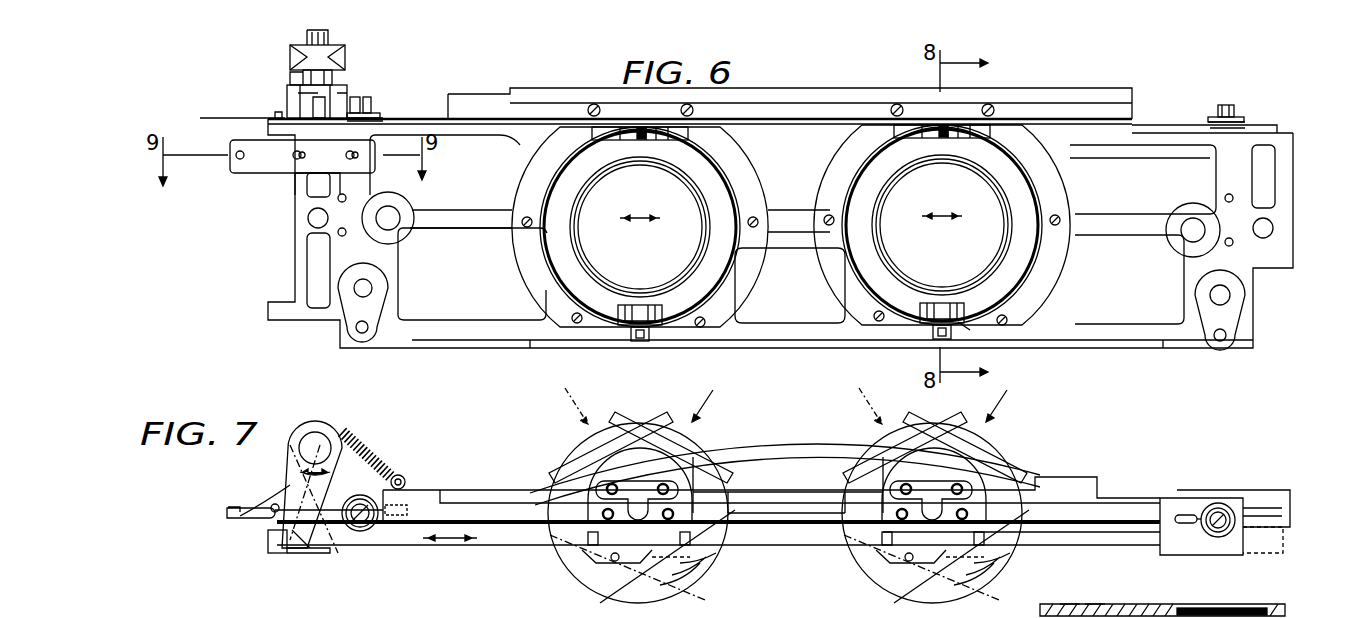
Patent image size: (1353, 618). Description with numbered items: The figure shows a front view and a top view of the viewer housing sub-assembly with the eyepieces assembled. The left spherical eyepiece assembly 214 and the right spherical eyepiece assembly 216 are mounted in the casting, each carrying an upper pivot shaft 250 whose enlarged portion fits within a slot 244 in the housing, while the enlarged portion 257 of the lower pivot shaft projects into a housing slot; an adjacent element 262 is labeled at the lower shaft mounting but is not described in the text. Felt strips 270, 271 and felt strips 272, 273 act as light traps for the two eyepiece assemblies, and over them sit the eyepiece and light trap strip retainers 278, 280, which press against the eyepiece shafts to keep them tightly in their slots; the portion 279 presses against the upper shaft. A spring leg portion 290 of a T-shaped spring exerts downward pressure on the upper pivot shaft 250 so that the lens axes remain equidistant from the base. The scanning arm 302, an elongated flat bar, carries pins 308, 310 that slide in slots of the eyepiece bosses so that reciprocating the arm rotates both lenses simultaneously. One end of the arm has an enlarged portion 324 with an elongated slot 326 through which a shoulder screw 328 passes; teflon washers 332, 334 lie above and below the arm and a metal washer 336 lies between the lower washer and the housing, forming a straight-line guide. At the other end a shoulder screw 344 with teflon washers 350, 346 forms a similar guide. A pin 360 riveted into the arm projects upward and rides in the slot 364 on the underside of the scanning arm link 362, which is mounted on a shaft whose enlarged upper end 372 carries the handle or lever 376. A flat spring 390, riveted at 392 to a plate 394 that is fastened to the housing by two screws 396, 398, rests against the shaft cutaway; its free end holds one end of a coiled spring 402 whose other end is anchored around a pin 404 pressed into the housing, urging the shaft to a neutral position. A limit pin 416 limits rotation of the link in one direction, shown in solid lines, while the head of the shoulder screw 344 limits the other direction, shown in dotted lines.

In FIG. 6, the left spherical eyepiece assembly 214 is at (990, 290).
In FIG. 7, the left spherical eyepiece assembly 214 is at (1010, 548).
In FIG. 6, the right spherical eyepiece assembly 216 is at (697, 285).
In FIG. 7, the right spherical eyepiece assembly 216 is at (700, 575).
In FIG. 7, the slot 244 is at (1085, 598).
In FIG. 7, the upper pivot shaft 250 is at (1090, 612).
In FIG. 6, the enlarged portion 257 is at (927, 340).
In FIG. 6, the lens mount tab 262 is at (957, 323).
In FIG. 6, the felt strip 270 is at (1035, 200).
In FIG. 6, the felt strip 271 is at (840, 270).
In FIG. 6, the felt strip 272 is at (548, 195).
In FIG. 6, the felt strip 273 is at (718, 163).
In FIG. 6, the eyepiece and light trap strip retainer 278 is at (1042, 282).
In FIG. 7, the portion of retainer 279 is at (1112, 614).
In FIG. 6, the eyepiece and light trap strip retainer 280 is at (747, 187).
In FIG. 7, the spring leg portion 290 is at (1083, 610).
In FIG. 6, the scanning arm 302 is at (479, 117).
In FIG. 7, the scanning arm 302 is at (522, 546).
In FIG. 6, the pin 308 is at (638, 132).
In FIG. 6, the pin 310 is at (943, 130).
In FIG. 7, the enlarged portion 324 is at (1163, 498).
In FIG. 7, the elongated slot 326 is at (1190, 515).
In FIG. 6, the shoulder screw 328 is at (1226, 105).
In FIG. 7, the shoulder screw 328 is at (1208, 530).
In FIG. 6, the teflon washer 332 is at (1240, 117).
In FIG. 7, the teflon washer 332 is at (1226, 506).
In FIG. 6, the teflon washer 334 is at (1248, 124).
In FIG. 7, the teflon washer 334 is at (1292, 500).
In FIG. 6, the metal washer 336 is at (1232, 133).
In FIG. 6, the shoulder screw 344 is at (367, 97).
In FIG. 7, the shoulder screw 344 is at (362, 532).
In FIG. 6, the teflon washer 346 is at (378, 116).
In FIG. 6, the teflon washer 350 is at (375, 107).
In FIG. 6, the pin 360 is at (313, 100).
In FIG. 7, the scanning arm link 362 is at (305, 553).
In FIG. 6, the slot 364 is at (332, 80).
In FIG. 6, the enlarged upper end 372 is at (315, 78).
In FIG. 6, the handle or lever 376 is at (337, 58).
In FIG. 7, the flat spring 390 is at (258, 498).
In FIG. 6, the rivet 392 is at (238, 160).
In FIG. 6, the plate 394 is at (288, 166).
In FIG. 7, the plate 394 is at (235, 518).
In FIG. 6, the screw 396 is at (297, 160).
In FIG. 6, the screw 398 is at (352, 160).
In FIG. 7, the coiled spring 402 is at (365, 450).
In FIG. 7, the pin 404 is at (405, 477).
In FIG. 7, the limit pin 416 is at (272, 523).